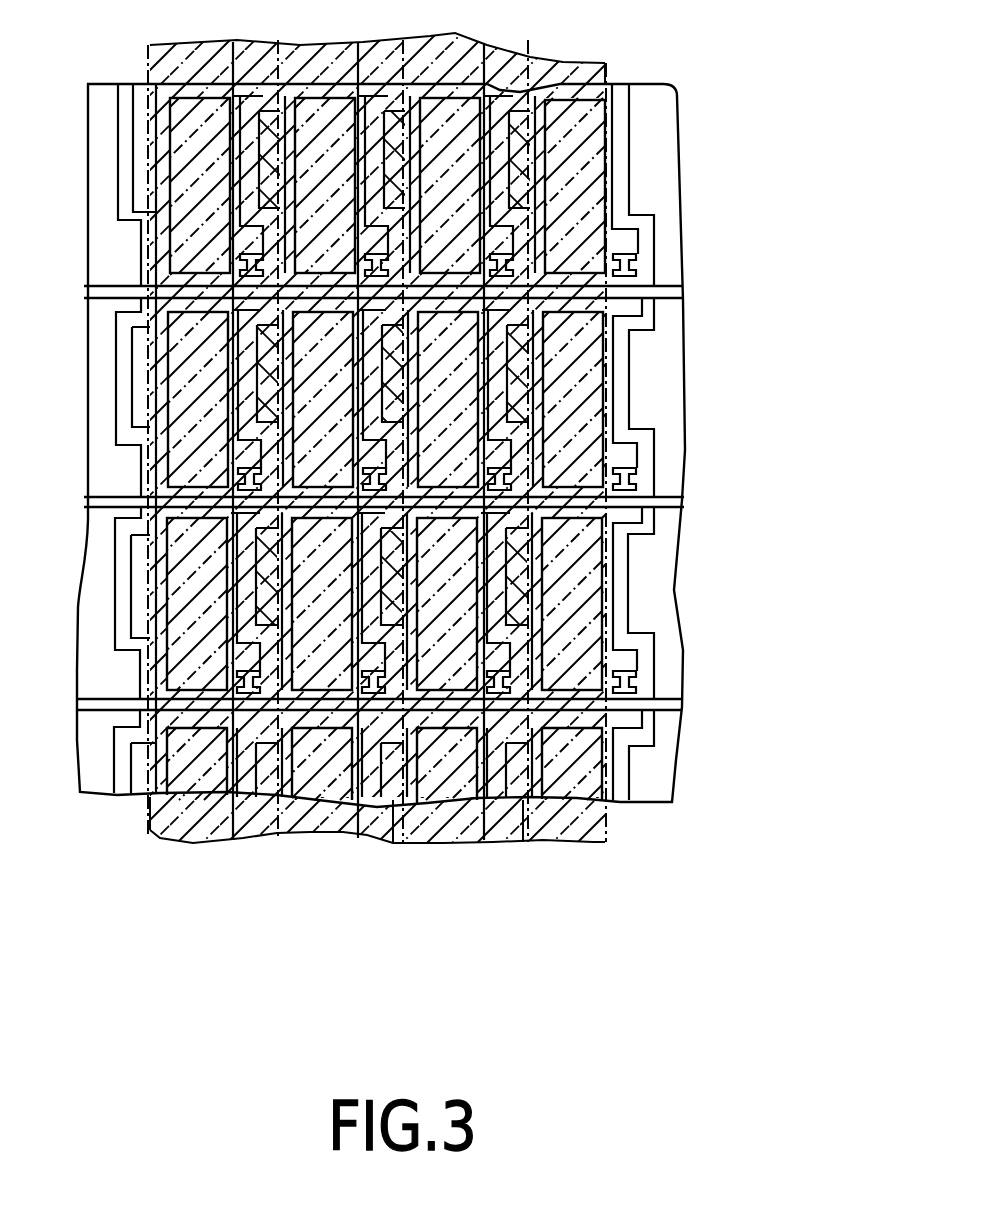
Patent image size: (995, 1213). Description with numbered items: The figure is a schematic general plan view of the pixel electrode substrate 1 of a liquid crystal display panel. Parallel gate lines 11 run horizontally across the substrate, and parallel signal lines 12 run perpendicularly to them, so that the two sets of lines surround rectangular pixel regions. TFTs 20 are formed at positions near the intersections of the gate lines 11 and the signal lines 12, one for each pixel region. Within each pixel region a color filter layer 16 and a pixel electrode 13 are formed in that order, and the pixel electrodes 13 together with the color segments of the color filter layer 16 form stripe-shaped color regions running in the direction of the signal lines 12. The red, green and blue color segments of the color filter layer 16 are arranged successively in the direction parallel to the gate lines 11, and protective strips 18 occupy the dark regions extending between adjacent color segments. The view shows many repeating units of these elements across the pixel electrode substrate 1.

The pixel electrode substrate 1 is at (772, 139).
The gate lines 11 is at (682, 497).
The signal lines 12 is at (622, 392).
The pixel electrodes 13 is at (607, 358).
The color filter layer 16 is at (148, 838).
The protective strips 18 is at (243, 836).
The TFTs 20 is at (633, 457).